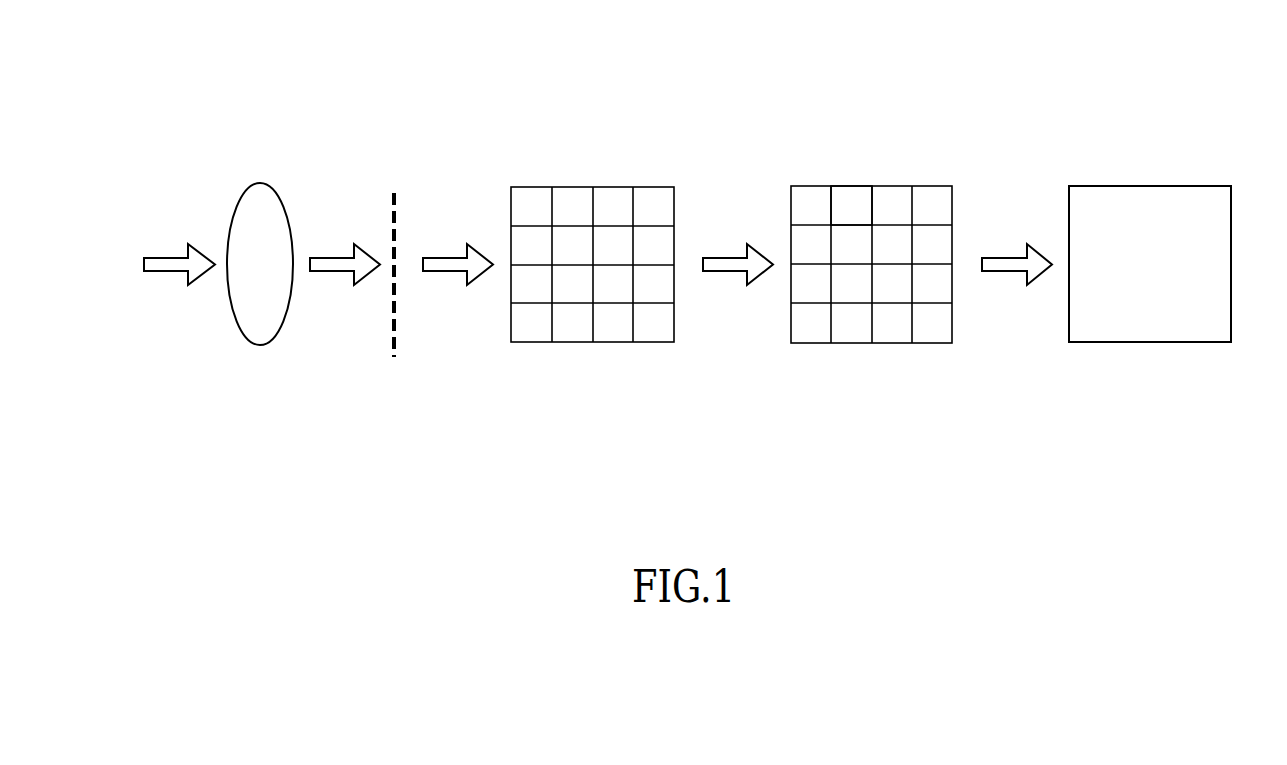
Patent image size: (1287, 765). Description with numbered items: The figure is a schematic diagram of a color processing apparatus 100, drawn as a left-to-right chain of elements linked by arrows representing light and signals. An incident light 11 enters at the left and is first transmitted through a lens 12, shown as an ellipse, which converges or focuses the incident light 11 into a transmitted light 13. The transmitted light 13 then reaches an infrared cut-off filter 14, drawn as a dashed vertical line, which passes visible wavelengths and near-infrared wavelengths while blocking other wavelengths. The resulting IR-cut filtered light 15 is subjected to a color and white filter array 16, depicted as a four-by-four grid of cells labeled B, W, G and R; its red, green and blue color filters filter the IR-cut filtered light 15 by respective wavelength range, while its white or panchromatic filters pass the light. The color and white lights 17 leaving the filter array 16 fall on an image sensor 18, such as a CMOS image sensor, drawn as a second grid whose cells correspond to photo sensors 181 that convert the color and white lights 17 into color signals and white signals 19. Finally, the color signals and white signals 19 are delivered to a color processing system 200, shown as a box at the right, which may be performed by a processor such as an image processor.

The color processing apparatus 100 is at (158, 58).
The incident light 11 is at (163, 257).
The lens 12 is at (236, 326).
The transmitted light 13 is at (323, 257).
The infrared cut-off filter 14 is at (392, 329).
The IR-cut filtered light 15 is at (440, 256).
The color and white filter array 16 is at (578, 187).
The color and white lights 17 is at (720, 255).
The image sensor 18 is at (871, 236).
The photo sensors 181 is at (846, 202).
The color signals and white signals 19 is at (1000, 256).
The color processing system 200 is at (1130, 186).